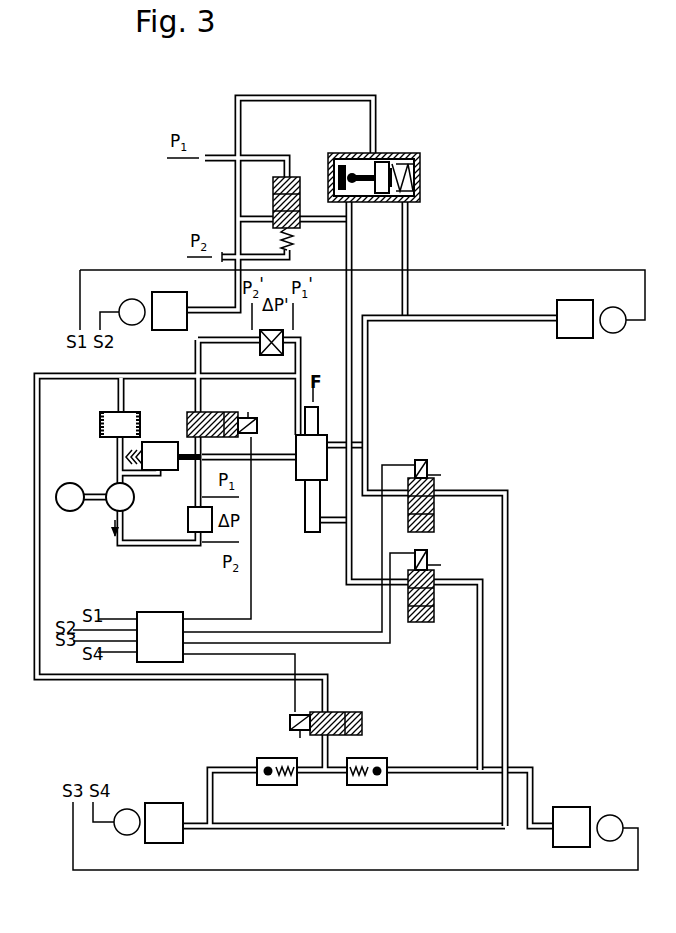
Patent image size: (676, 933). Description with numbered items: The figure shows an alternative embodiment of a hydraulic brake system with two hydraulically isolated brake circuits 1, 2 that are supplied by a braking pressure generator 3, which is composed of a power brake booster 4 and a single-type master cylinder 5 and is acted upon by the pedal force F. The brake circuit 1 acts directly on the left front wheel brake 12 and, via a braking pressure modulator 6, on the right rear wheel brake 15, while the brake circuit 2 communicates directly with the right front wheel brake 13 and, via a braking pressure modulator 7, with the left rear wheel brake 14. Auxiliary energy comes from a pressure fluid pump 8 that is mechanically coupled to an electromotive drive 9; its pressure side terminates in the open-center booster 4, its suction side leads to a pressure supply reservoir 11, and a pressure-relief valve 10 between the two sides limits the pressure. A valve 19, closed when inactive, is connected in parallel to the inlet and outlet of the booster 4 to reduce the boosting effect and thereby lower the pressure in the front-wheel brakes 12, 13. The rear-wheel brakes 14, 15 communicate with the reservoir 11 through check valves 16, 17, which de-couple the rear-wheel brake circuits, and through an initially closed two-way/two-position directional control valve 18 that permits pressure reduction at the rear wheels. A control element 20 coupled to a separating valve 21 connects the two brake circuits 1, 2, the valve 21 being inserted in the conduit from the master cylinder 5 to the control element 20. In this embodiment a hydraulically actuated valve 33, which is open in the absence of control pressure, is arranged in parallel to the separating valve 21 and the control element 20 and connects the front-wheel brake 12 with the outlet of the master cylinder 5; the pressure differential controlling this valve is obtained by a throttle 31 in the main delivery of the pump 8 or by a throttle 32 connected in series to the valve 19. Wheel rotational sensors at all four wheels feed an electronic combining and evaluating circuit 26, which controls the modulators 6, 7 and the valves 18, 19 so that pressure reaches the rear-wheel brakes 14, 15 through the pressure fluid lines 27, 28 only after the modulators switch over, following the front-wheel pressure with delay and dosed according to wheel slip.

The brake circuit 1 is at (349, 398).
The brake circuit 2 is at (369, 398).
The braking pressure generator 3 is at (292, 444).
The power brake booster 4 is at (296, 476).
The master cylinder 5 is at (305, 521).
The braking pressure modulator 6 is at (434, 602).
The braking pressure modulator 7 is at (434, 512).
The pressure fluid pump 8 is at (109, 486).
The electromotive drive 9 is at (64, 485).
The pressure-relief valve 10 is at (163, 442).
The pressure supply reservoir 11 is at (100, 424).
The front-wheel brake 12 is at (170, 292).
The front-wheel brake 13 is at (573, 300).
The rear-wheel brake 14 is at (165, 843).
The rear-wheel brake 15 is at (572, 847).
The check valve 16 is at (270, 785).
The check valve 17 is at (360, 785).
The two-way/two-position directional control valve 18 is at (362, 720).
The valve 19 is at (219, 407).
The control element 20 is at (383, 158).
The separating valve 21 is at (345, 153).
The electronic combining and evaluating circuit 26 is at (157, 652).
The pressure fluid line 27 is at (477, 716).
The pressure fluid line 28 is at (507, 714).
The throttle 31 is at (188, 521).
The throttle 32 is at (285, 352).
The hydraulically actuated valve 33 is at (291, 177).